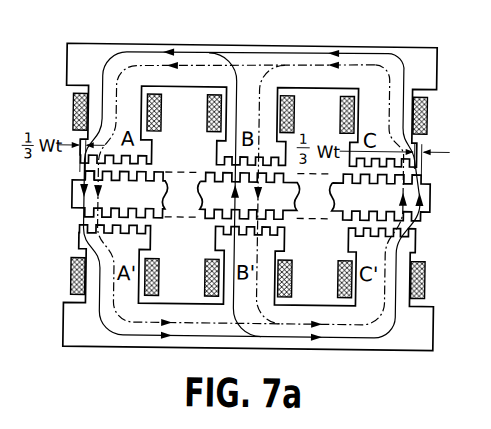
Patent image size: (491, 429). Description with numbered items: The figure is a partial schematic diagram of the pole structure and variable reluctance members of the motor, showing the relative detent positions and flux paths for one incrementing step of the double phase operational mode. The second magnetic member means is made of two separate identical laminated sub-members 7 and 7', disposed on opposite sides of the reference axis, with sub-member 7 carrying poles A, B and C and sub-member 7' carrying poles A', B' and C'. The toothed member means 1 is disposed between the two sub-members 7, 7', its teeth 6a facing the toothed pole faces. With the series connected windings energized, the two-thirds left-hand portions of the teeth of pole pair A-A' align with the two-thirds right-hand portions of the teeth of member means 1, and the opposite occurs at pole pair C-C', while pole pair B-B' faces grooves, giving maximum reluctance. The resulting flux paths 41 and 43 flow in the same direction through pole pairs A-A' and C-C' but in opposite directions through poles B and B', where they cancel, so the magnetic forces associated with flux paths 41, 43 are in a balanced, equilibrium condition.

The sub-member 7 is at (241, 105).
The sub-member 7' is at (235, 287).
The member means 1 is at (79, 200).
The rotor tooth 6a is at (81, 171).
The flux path 41 is at (388, 51).
The flux path 43 is at (384, 69).